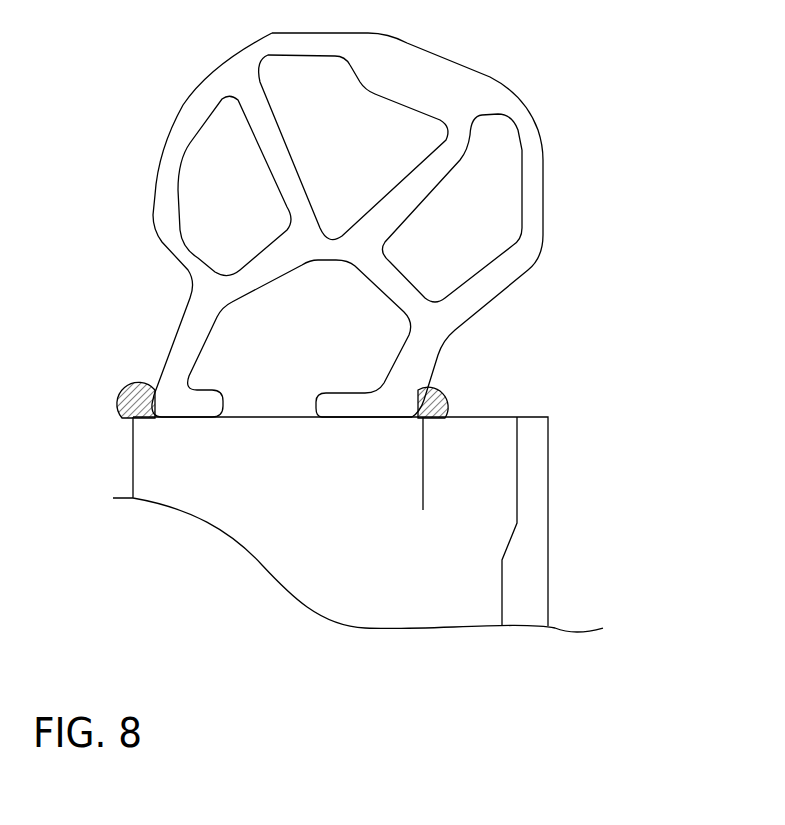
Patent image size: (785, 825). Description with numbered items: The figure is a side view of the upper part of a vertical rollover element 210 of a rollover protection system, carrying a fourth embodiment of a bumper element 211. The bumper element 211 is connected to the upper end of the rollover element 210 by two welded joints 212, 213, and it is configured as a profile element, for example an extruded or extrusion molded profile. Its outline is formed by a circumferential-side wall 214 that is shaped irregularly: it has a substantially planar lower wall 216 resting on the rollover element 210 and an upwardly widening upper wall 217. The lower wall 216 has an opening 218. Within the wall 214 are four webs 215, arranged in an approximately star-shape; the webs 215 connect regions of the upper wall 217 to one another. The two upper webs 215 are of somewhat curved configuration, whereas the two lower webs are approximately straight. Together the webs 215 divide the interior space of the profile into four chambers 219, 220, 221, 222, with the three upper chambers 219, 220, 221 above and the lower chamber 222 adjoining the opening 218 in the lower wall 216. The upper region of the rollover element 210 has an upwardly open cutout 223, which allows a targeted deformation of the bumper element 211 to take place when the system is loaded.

The rollover element 210 is at (343, 524).
The bumper element 211 is at (343, 259).
The welded joint 212 is at (133, 407).
The welded joint 213 is at (430, 403).
The circumferential-side wall 214 is at (537, 223).
The webs 215 is at (407, 199).
The lower wall 216 is at (187, 397).
The upper wall 217 is at (162, 192).
The opening 218 is at (256, 400).
The chamber 219 is at (246, 201).
The chamber 220 is at (368, 201).
The chamber 221 is at (481, 234).
The chamber 222 is at (367, 370).
The cutout 223 is at (498, 477).